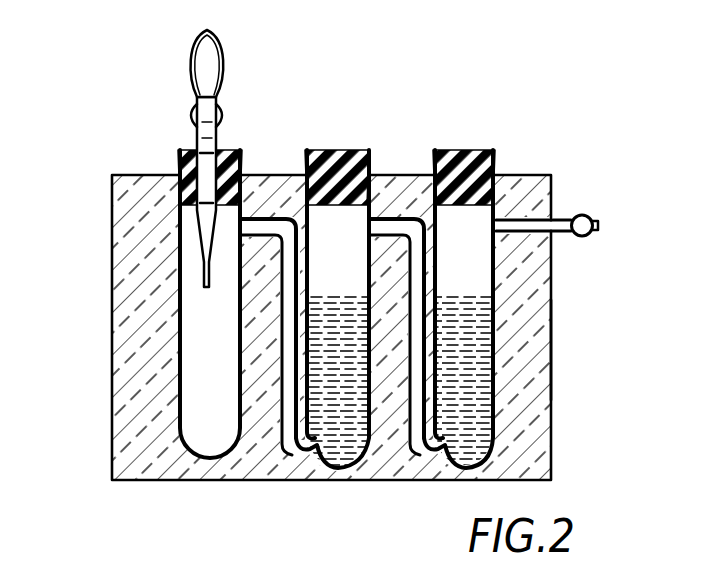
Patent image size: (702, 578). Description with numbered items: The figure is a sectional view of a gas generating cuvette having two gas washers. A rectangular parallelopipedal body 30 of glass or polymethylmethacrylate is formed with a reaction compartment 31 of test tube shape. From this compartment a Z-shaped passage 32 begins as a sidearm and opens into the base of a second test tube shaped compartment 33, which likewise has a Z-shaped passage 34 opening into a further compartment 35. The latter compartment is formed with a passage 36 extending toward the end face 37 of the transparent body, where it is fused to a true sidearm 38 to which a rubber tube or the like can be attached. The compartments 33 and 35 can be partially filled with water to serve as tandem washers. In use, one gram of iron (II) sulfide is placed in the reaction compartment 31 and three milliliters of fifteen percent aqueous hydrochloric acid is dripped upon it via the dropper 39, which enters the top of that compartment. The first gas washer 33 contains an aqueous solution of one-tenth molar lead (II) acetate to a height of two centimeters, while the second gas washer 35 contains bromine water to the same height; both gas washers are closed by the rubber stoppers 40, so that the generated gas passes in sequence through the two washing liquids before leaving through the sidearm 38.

The rectangular parallelopipedal body 30 is at (112, 252).
The reaction compartment 31 is at (182, 350).
The Z-shaped passage 32 is at (272, 213).
The second test tube shaped compartment 33 is at (362, 403).
The Z-shaped passage 34 is at (395, 214).
The compartment 35 is at (490, 270).
The passage 36 is at (524, 216).
The end face 37 is at (552, 342).
The sidearm 38 is at (567, 218).
The dropper 39 is at (209, 137).
The rubber stoppers 40 is at (338, 150).